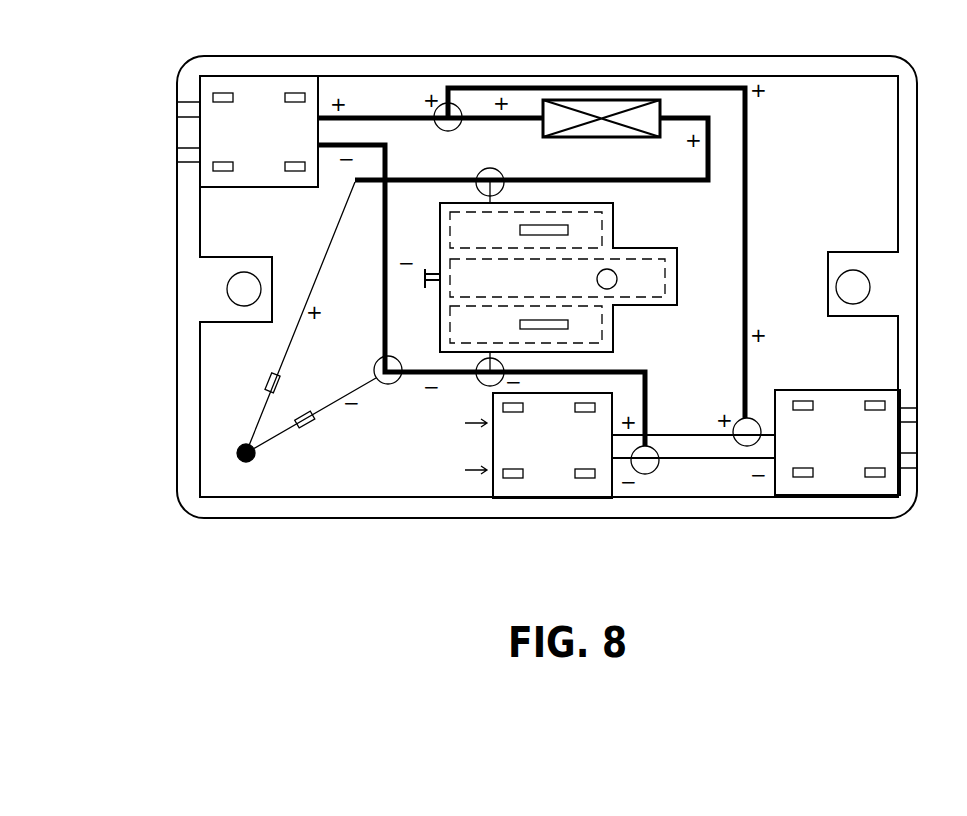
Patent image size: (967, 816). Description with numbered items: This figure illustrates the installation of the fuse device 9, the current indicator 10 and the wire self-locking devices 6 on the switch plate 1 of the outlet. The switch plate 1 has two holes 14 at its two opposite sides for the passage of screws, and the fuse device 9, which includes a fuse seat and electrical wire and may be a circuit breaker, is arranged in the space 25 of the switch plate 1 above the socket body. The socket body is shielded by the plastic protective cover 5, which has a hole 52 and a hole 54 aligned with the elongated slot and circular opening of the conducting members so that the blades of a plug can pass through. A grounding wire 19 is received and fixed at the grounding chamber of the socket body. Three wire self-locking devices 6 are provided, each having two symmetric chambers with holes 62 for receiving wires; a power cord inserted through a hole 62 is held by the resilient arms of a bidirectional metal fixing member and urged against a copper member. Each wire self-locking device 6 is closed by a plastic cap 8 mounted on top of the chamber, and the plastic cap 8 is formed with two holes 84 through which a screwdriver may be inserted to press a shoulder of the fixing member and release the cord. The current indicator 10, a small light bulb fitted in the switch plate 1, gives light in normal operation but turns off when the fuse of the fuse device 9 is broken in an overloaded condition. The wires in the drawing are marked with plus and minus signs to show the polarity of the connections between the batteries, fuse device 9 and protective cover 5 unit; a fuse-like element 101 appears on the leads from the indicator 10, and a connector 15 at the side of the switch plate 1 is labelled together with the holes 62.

The switch plate 1 is at (917, 110).
The plastic protective cover 5 is at (660, 307).
The wire self-locking device 6 is at (963, 600).
The plastic cap 8 is at (313, 90).
The fuse device 9 is at (600, 105).
The current indicator 10 is at (246, 463).
The holes 14 is at (242, 293).
The external connector 15 is at (178, 155).
The grounding wire 19 is at (425, 290).
The space 25 is at (805, 103).
The hole 52 is at (557, 320).
The hole 54 is at (615, 279).
The holes 62 is at (472, 446).
The holes 84 is at (285, 92).
The wire fuse 101 is at (268, 380).